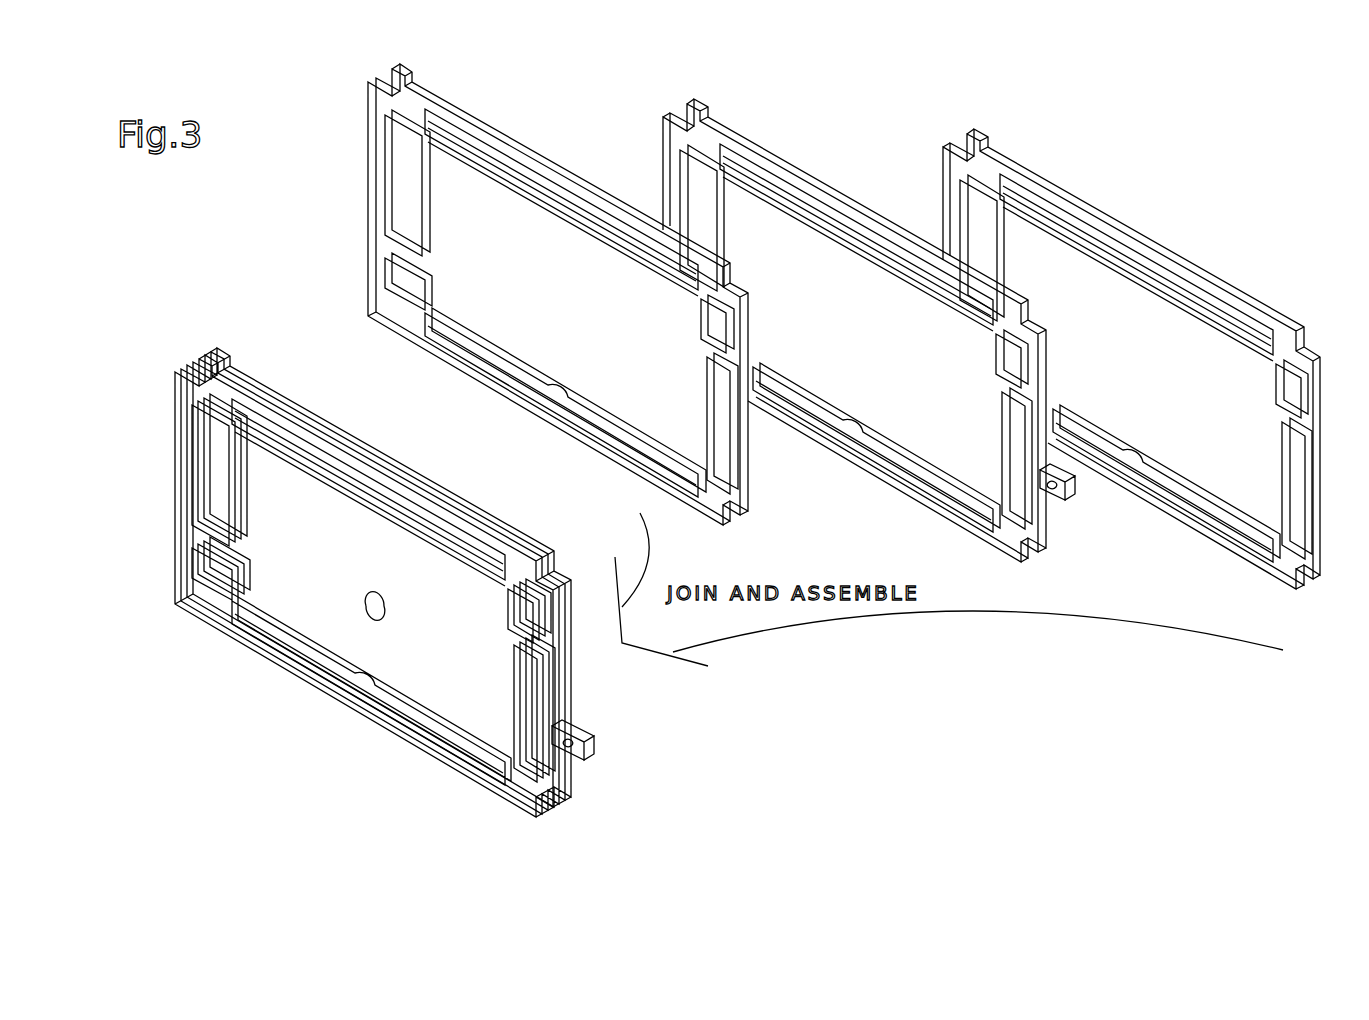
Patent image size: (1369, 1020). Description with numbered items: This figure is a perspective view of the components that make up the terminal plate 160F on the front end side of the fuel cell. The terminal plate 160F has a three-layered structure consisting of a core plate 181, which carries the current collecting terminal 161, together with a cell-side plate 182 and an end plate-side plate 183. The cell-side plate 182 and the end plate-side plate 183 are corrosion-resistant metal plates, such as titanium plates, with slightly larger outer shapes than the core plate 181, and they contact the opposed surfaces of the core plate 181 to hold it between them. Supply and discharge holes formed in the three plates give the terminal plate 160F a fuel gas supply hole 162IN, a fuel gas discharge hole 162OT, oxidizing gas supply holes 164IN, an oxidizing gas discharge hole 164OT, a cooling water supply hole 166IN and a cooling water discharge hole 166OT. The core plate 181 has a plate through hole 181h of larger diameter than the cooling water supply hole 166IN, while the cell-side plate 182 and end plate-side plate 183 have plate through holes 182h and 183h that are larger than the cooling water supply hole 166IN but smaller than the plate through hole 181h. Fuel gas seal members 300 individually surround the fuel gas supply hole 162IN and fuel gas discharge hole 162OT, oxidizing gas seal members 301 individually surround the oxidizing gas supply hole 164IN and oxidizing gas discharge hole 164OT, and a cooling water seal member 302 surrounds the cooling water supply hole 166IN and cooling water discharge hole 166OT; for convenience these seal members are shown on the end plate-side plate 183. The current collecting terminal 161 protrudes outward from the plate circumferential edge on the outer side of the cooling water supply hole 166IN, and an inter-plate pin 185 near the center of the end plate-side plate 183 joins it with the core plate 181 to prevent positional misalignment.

The end plate-side plate 183 is at (399, 78).
The core plate 181 is at (698, 114).
The cell-side plate 182 is at (978, 150).
The terminal plate 160F is at (215, 372).
The fuel gas seal member 300 is at (392, 318).
The cooling water discharge hole 166OT is at (398, 158).
The fuel gas discharge hole 162OT is at (424, 277).
The oxidizing gas discharge hole 164OT is at (546, 196).
The oxidizing gas seal member 301 is at (538, 148).
The fuel gas supply hole 162IN is at (704, 333).
The oxidizing gas supply hole 164IN is at (592, 402).
The cooling water seal member 302 is at (665, 490).
The plate through hole 183h is at (706, 385).
The plate through hole 181h is at (1002, 422).
The plate through hole 182h is at (1277, 450).
The cooling water supply hole 166IN is at (517, 687).
The current collecting terminal 161 is at (1050, 520).
The inter-plate pin 185 is at (380, 596).